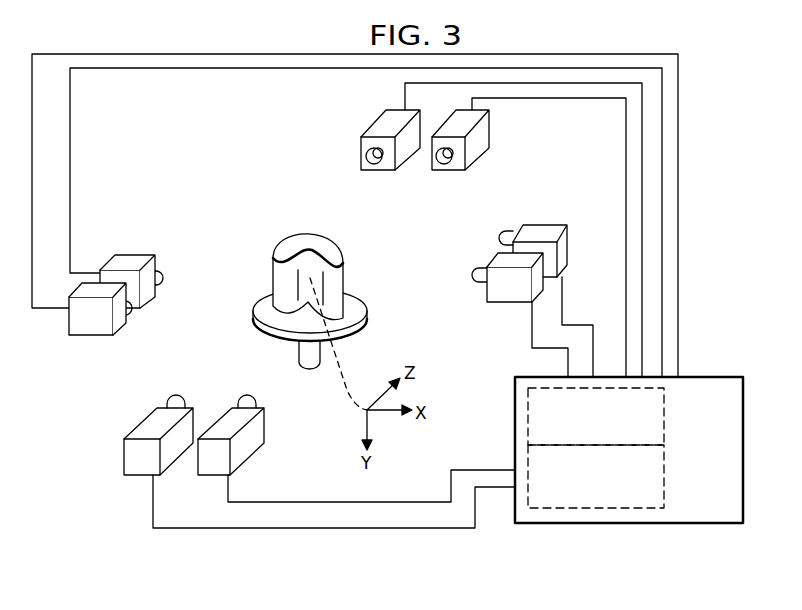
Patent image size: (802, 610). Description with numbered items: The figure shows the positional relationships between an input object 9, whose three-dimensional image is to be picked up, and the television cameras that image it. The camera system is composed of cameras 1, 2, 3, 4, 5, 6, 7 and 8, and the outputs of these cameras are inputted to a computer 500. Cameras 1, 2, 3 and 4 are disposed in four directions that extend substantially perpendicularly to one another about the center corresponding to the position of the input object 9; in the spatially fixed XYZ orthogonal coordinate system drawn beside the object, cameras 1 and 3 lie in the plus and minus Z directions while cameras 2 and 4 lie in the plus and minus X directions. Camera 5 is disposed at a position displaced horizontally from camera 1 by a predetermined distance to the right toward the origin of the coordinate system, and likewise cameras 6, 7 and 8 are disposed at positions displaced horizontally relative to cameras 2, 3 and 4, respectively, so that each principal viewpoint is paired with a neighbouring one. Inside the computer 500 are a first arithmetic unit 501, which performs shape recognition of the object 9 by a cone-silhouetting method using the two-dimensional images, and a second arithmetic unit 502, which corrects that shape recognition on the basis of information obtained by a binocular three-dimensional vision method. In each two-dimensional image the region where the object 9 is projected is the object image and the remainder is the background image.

The camera 1 is at (137, 465).
The camera 2 is at (135, 258).
The camera 3 is at (478, 138).
The camera 4 is at (503, 292).
The camera 5 is at (213, 458).
The camera 6 is at (88, 325).
The camera 7 is at (382, 128).
The camera 8 is at (560, 249).
The input object 9 is at (325, 243).
The computer 500 is at (595, 474).
The first arithmetic unit 501 is at (528, 422).
The second arithmetic unit 502 is at (528, 462).